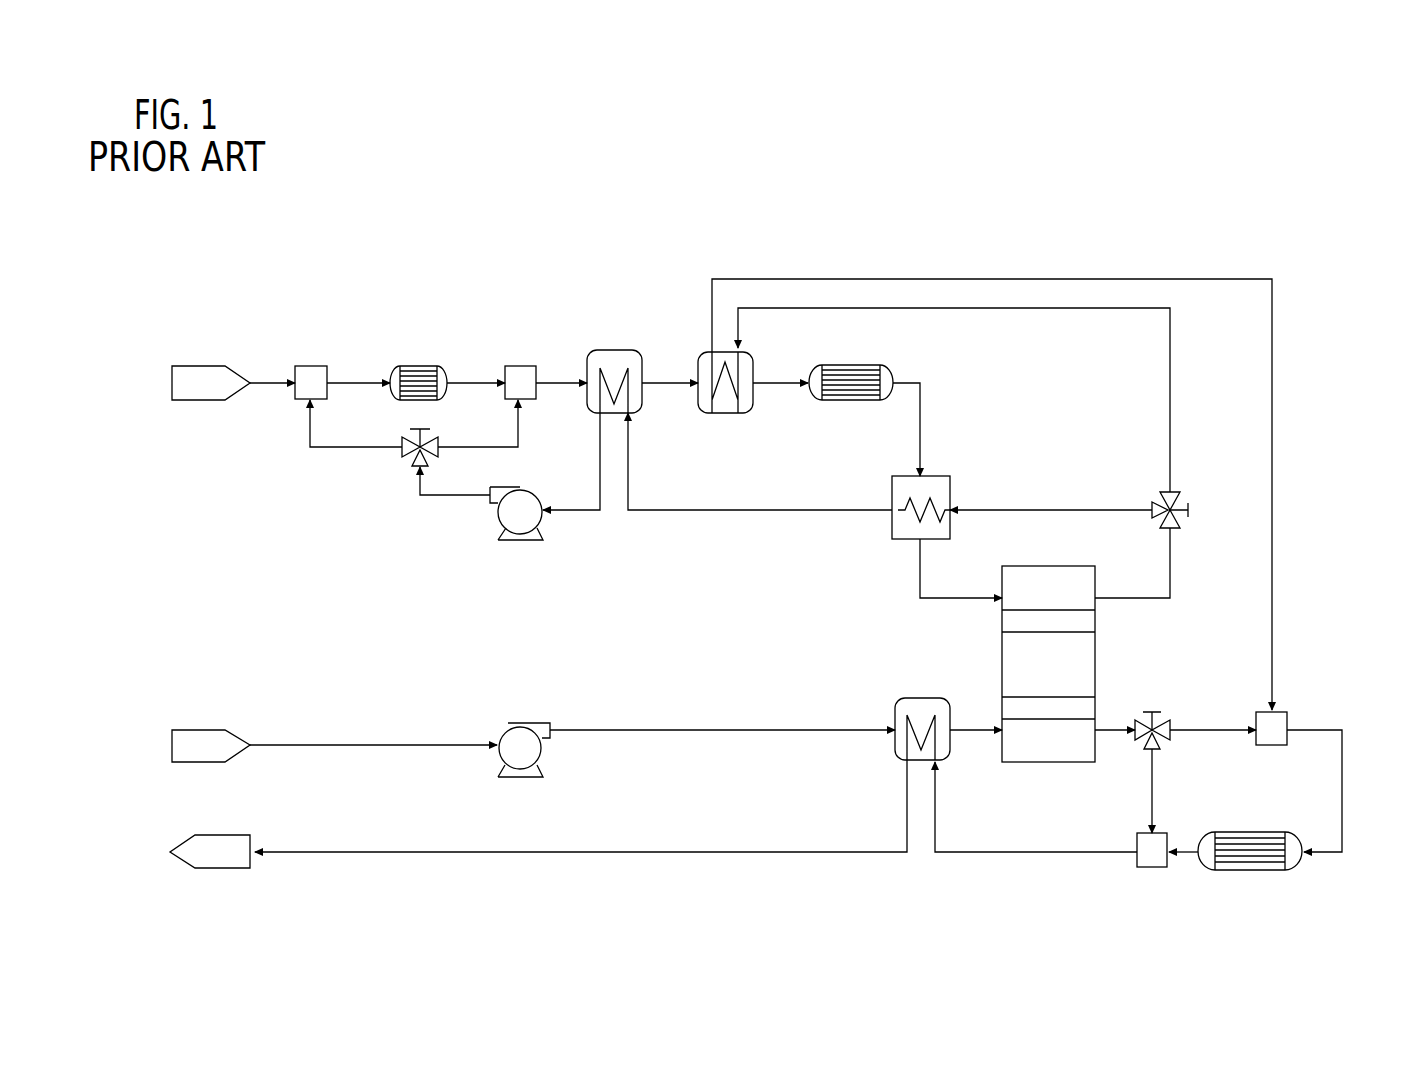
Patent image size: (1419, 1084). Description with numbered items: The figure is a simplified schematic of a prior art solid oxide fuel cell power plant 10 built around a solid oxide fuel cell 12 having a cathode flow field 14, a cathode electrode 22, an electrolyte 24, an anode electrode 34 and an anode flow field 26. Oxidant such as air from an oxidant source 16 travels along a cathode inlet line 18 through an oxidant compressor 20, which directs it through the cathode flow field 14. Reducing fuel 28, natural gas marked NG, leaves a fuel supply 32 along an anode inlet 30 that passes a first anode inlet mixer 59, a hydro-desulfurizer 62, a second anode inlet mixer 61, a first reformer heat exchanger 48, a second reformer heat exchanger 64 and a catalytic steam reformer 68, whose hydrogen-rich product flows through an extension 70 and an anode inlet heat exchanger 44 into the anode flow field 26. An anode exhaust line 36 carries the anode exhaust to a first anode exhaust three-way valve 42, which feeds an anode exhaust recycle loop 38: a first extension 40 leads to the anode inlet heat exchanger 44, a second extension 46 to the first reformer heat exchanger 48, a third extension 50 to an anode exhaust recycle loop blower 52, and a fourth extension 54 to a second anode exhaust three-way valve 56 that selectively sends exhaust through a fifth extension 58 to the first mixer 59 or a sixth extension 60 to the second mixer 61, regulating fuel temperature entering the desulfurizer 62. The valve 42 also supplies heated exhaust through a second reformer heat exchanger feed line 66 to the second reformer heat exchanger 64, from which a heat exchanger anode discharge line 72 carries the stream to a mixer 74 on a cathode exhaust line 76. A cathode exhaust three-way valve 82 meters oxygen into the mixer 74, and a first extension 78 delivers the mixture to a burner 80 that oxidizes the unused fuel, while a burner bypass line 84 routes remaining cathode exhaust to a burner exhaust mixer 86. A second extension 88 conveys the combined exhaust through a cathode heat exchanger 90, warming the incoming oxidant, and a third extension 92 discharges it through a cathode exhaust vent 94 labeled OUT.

The solid oxide fuel cell power plant 10 is at (1333, 236).
The solid oxide fuel cell 12 is at (1150, 645).
The cathode flow field 14 is at (1023, 744).
The oxidant source 16 is at (197, 730).
The cathode inlet line 18 is at (345, 745).
The oxidant compressor 20 is at (513, 730).
The cathode electrode 22 is at (1097, 705).
The electrolyte 24 is at (1002, 660).
The anode flow field 26 is at (1078, 578).
The reducing fuel 28 is at (228, 366).
The anode inlet 30 is at (262, 383).
The fuel supply 32 is at (212, 400).
The anode electrode 34 is at (1002, 614).
The anode exhaust line 36 is at (1158, 604).
The anode exhaust recycle loop 38 is at (1012, 416).
The first extension 40 is at (1070, 510).
The first anode exhaust three-way valve 42 is at (1178, 492).
The anode inlet heat exchanger 44 is at (892, 525).
The second extension 46 is at (740, 510).
The first reformer heat exchanger 48 is at (613, 350).
The third extension 50 is at (598, 480).
The anode exhaust recycle loop blower 52 is at (495, 515).
The fourth extension 54 is at (420, 492).
The second anode exhaust three-way valve 56 is at (405, 450).
The fifth extension 58 is at (309, 432).
The first anode inlet mixer 59 is at (311, 366).
The sixth extension 60 is at (517, 430).
The second anode inlet mixer 61 is at (516, 366).
The hydro-desulfurizer 62 is at (405, 366).
The second reformer heat exchanger 64 is at (725, 413).
The second reformer heat exchanger feed line 66 is at (1032, 308).
The catalytic steam reformer 68 is at (840, 400).
The extension of the anode inlet 70 is at (923, 432).
The heat exchanger anode discharge line 72 is at (1060, 279).
The mixer 74 is at (1285, 712).
The cathode exhaust line 76 is at (1228, 728).
The first extension of the cathode exhaust line 78 is at (1343, 762).
The burner 80 is at (1270, 832).
The cathode exhaust three-way valve 82 is at (1160, 752).
The burner bypass line 84 is at (1150, 788).
The burner exhaust mixer 86 is at (1137, 865).
The second extension of the cathode exhaust line 88 is at (984, 852).
The cathode heat exchanger 90 is at (893, 745).
The third extension of the cathode exhaust line 92 is at (655, 852).
The cathode exhaust vent 94 is at (232, 835).